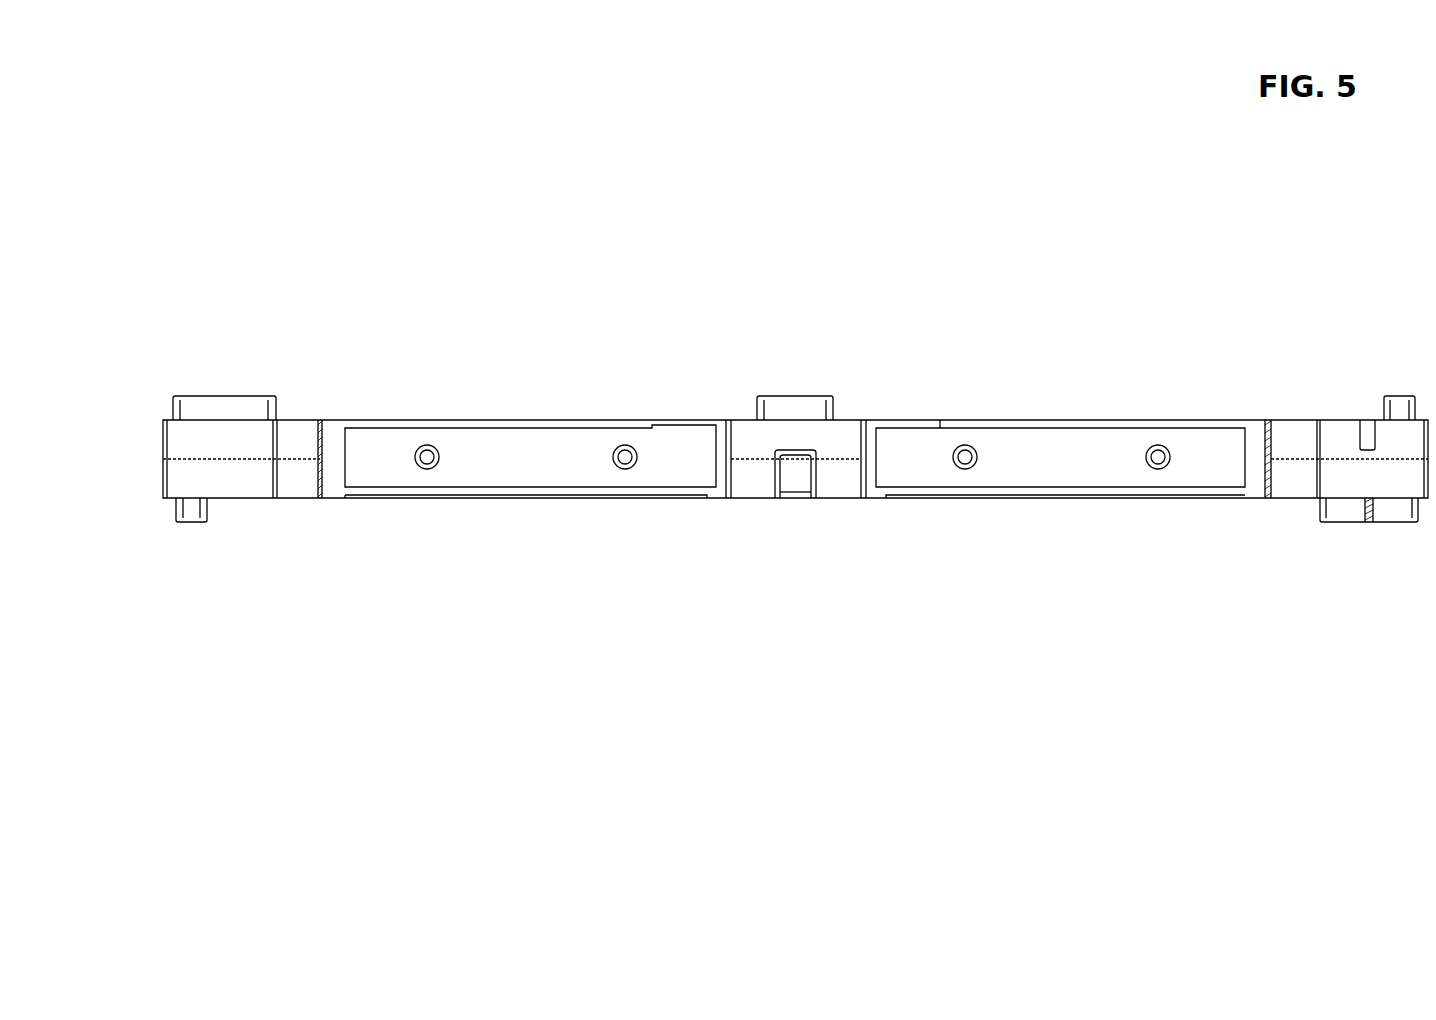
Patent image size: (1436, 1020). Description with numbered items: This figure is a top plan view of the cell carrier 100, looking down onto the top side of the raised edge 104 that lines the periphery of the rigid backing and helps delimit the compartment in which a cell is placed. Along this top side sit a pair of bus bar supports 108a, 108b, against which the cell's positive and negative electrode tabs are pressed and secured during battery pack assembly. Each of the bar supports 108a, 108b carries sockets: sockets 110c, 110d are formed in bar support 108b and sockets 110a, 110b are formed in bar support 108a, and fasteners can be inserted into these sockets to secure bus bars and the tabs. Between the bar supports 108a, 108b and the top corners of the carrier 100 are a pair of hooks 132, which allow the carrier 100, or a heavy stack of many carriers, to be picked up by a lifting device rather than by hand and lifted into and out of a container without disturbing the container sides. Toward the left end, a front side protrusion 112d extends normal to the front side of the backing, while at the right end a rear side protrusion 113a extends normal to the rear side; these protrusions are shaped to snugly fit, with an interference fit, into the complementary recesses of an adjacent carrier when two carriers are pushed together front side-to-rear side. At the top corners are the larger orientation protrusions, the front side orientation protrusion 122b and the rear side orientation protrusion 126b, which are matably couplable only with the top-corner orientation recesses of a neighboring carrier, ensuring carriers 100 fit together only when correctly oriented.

The cell carrier 100 is at (431, 246).
The raised edge 104 is at (1403, 472).
The bus bar support 108a is at (1057, 460).
The bus bar support 108b is at (505, 460).
The socket 110a is at (1158, 468).
The socket 110b is at (965, 468).
The socket 110c is at (622, 468).
The socket 110d is at (421, 518).
The front side protrusion 112d is at (192, 522).
The rear side protrusion 113a is at (1397, 410).
The front side orientation protrusion 122b is at (1372, 522).
The rear side orientation protrusion 126b is at (192, 410).
The hook 132 is at (290, 480).